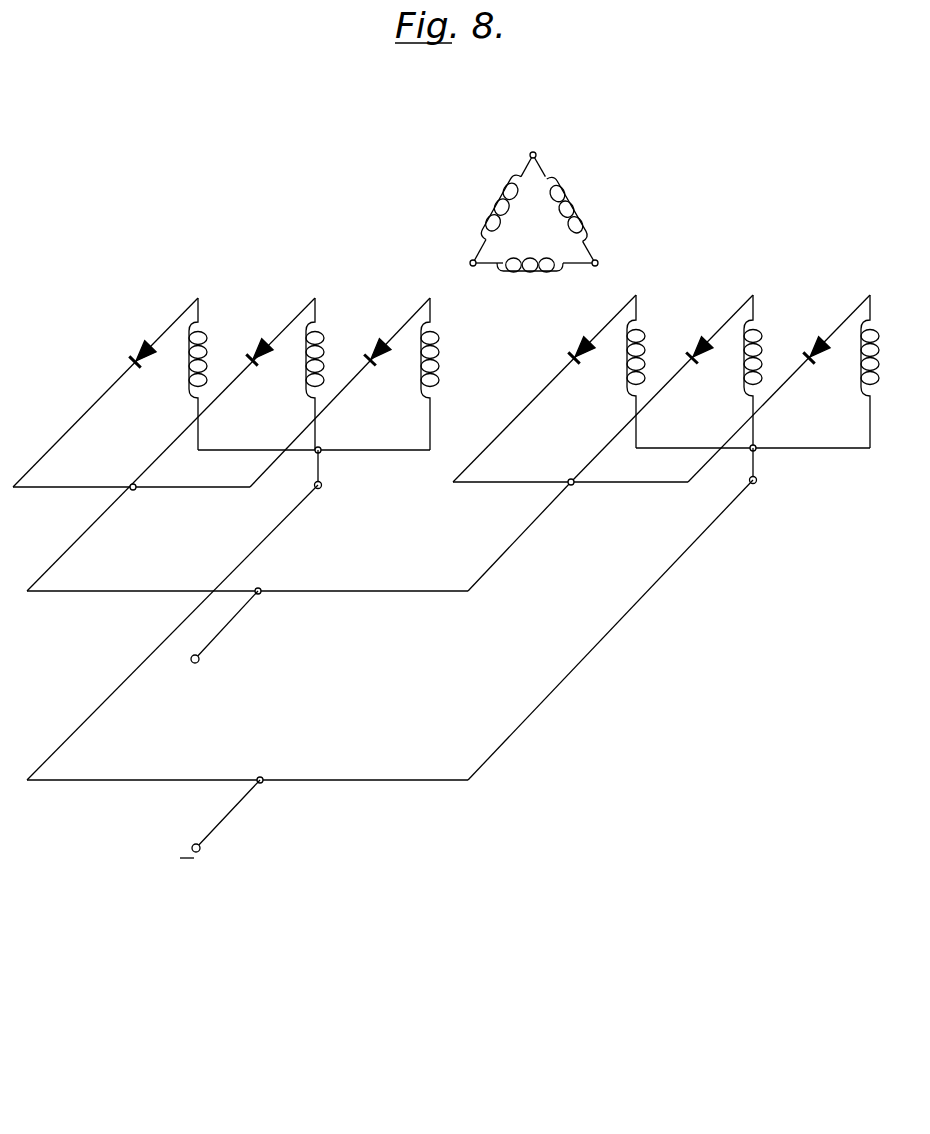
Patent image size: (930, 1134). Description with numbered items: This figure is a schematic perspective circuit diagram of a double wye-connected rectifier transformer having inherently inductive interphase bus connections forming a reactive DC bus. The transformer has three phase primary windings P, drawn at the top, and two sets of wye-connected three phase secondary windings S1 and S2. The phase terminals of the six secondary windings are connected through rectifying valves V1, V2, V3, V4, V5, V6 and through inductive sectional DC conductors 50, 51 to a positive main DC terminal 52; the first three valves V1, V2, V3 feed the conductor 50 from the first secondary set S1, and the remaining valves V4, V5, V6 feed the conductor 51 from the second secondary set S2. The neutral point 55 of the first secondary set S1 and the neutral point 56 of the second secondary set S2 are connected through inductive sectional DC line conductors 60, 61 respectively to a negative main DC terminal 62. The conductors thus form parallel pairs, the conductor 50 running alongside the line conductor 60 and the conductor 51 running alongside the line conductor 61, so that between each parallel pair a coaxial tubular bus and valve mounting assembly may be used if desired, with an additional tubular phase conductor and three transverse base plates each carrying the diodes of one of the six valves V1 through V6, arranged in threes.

The inductive sectional DC conductor 50 is at (77, 540).
The inductive sectional DC conductor 51 is at (541, 515).
The positive main DC terminal 52 is at (199, 662).
The neutral point 55 is at (322, 487).
The neutral point 56 is at (757, 482).
The inductive sectional DC line conductor 60 is at (103, 703).
The inductive sectional DC line conductor 61 is at (571, 672).
The negative main DC terminal 62 is at (200, 850).
The rectifying valve V1 is at (132, 350).
The rectifying valve V2 is at (250, 350).
The rectifying valve V3 is at (368, 350).
The rectifying valve V4 is at (571, 348).
The rectifying valve V5 is at (689, 348).
The rectifying valve V6 is at (807, 348).
The wye-connected three phase secondary windings S1 is at (351, 438).
The wye-connected three phase secondary windings S2 is at (792, 437).
The three phase primary windings P is at (542, 234).